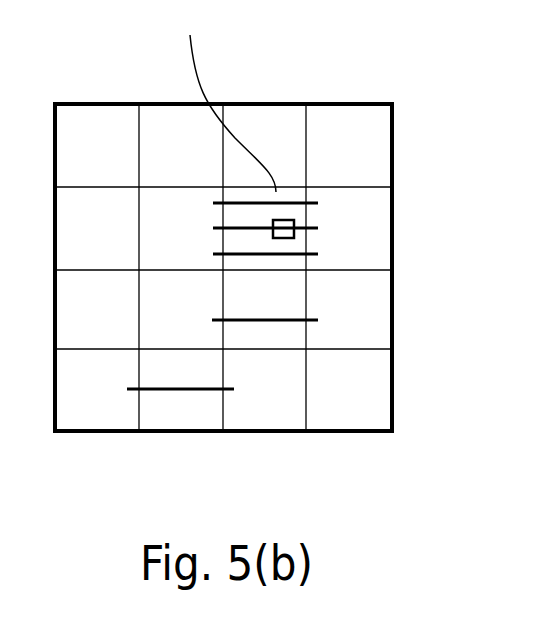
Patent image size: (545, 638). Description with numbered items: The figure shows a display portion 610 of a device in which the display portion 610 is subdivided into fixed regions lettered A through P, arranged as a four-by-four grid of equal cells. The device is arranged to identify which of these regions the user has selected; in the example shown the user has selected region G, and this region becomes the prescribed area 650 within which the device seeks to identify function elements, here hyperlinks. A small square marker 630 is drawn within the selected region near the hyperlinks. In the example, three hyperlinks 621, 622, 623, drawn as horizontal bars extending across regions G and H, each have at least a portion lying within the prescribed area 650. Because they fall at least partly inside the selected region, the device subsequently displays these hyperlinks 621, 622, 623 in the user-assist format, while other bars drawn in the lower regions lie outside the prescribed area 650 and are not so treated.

The display portion 610 is at (392, 383).
The hyperlink 621 is at (315, 201).
The hyperlink 622 is at (318, 228).
The hyperlink 623 is at (318, 254).
The cursor 630 is at (288, 219).
The prescribed area 650 is at (224, 100).